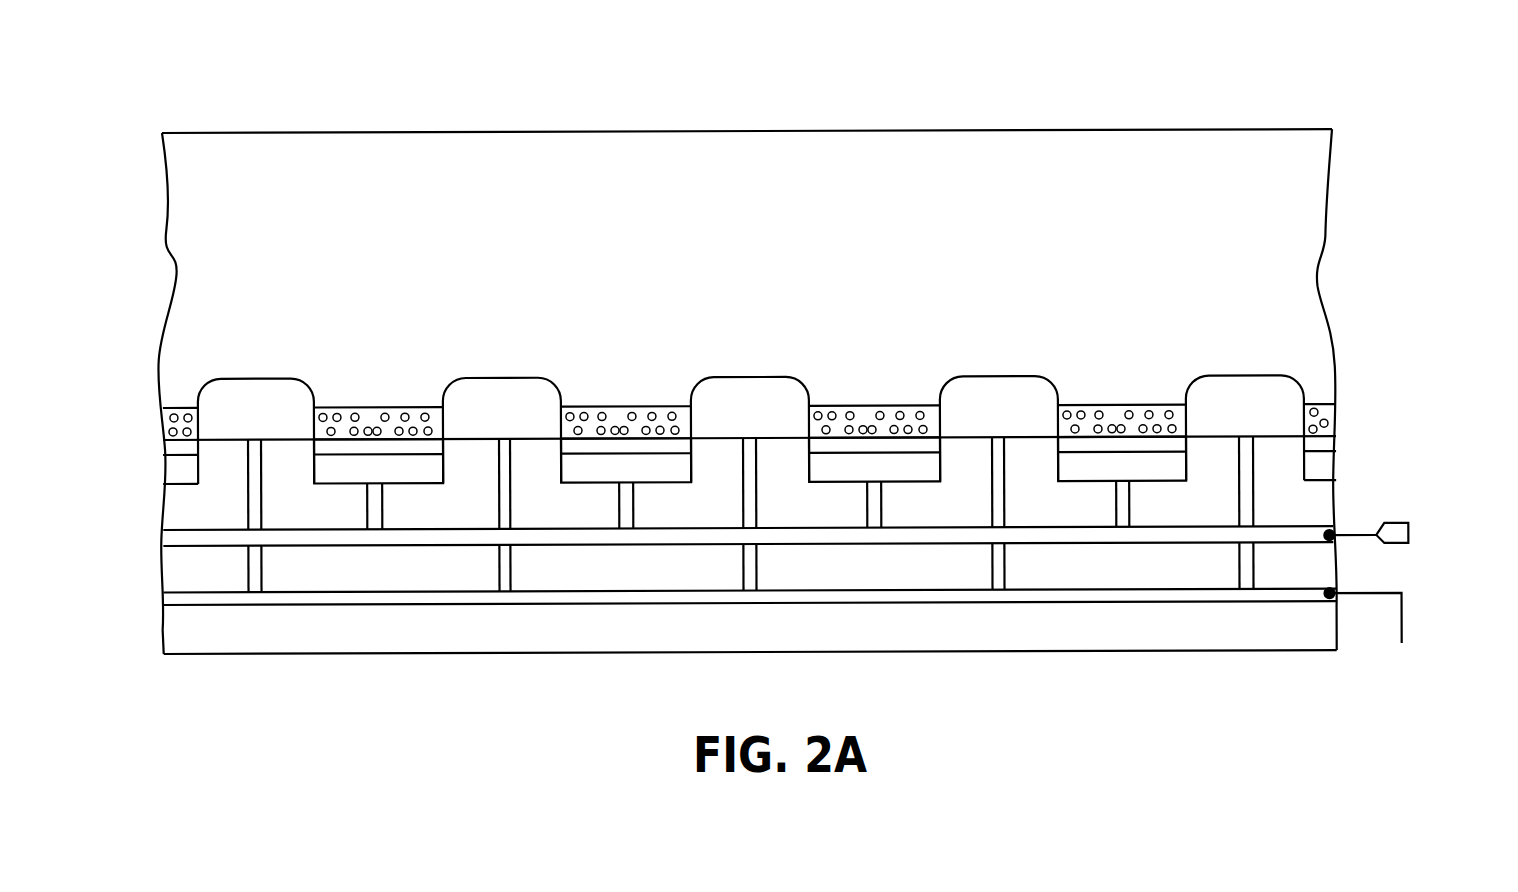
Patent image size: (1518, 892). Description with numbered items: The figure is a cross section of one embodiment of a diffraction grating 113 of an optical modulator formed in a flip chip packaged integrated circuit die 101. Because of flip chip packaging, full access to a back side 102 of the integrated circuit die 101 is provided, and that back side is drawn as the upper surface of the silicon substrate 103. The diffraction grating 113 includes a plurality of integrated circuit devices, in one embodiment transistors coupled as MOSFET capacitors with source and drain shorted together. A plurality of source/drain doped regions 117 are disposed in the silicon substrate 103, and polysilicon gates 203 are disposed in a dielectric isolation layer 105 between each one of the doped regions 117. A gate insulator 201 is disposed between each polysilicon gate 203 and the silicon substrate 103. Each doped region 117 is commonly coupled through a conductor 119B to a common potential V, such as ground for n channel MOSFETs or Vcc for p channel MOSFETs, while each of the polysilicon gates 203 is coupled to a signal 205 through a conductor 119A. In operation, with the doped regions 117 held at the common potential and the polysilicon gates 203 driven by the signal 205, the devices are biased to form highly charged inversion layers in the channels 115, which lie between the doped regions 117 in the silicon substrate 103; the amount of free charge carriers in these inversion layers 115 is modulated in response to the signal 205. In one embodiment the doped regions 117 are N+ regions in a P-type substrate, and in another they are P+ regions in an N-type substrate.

The integrated circuit die 101 is at (1352, 117).
The back side 102 is at (1114, 133).
The silicon substrate 103 is at (1322, 182).
The dielectric isolation layer 105 is at (1325, 496).
The diffraction grating 113 is at (1355, 26).
The channels 115 is at (344, 408).
The source/drain doped regions 117 is at (233, 392).
The conductor 119A is at (338, 528).
The conductor 119B is at (619, 586).
The gate insulator 201 is at (437, 446).
The polysilicon gates 203 is at (417, 479).
The signal 205 is at (1455, 557).